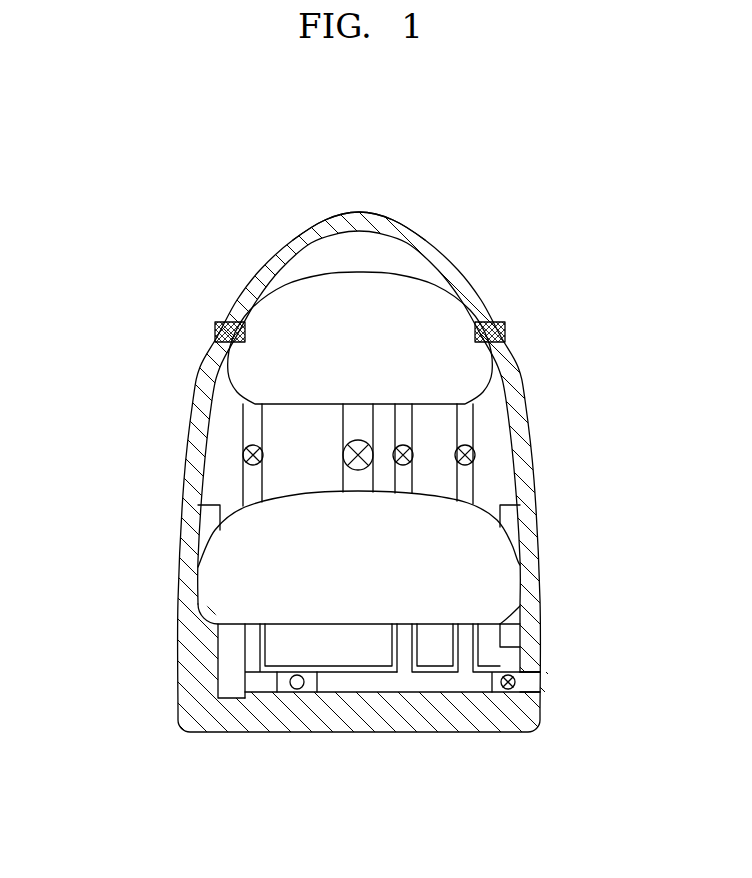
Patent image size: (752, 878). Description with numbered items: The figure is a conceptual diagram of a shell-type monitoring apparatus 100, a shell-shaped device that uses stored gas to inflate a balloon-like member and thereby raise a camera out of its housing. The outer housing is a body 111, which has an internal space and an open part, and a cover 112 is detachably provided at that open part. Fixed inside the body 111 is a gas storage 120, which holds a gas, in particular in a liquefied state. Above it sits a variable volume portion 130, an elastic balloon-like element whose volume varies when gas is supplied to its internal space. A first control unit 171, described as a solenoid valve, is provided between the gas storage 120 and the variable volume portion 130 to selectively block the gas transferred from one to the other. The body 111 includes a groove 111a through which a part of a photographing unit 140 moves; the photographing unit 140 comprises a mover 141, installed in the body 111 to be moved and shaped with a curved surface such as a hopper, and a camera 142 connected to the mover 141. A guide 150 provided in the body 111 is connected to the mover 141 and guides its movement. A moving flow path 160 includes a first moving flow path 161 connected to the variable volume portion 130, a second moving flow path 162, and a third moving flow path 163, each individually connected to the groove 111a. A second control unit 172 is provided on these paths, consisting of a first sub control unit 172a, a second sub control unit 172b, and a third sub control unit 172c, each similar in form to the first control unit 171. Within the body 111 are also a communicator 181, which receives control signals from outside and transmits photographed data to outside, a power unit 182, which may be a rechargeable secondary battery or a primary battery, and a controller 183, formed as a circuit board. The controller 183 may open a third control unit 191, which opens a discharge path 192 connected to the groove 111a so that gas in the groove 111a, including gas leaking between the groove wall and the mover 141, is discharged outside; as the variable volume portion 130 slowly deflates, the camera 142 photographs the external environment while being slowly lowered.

The shell-type monitoring apparatus 100 is at (338, 144).
The body 111 is at (523, 417).
The groove 111a is at (403, 676).
The cover 112 is at (430, 243).
The gas storage 120 is at (490, 582).
The variable volume portion 130 is at (437, 320).
The photographing unit 140 is at (345, 800).
The mover 141 is at (279, 698).
The camera 142 is at (300, 691).
The guide 150 is at (467, 692).
The moving flow path 160 is at (123, 268).
The first moving flow path 161 is at (253, 412).
The second moving flow path 162 is at (403, 413).
The third moving flow path 163 is at (467, 415).
The first control unit 171 is at (357, 471).
The second control unit 172 is at (92, 397).
The first sub control unit 172a is at (244, 466).
The second sub control unit 172b is at (393, 448).
The third sub control unit 172c is at (455, 446).
The communicator 181 is at (208, 520).
The power unit 182 is at (510, 522).
The controller 183 is at (512, 634).
The third control unit 191 is at (516, 682).
The discharge path 192 is at (527, 688).